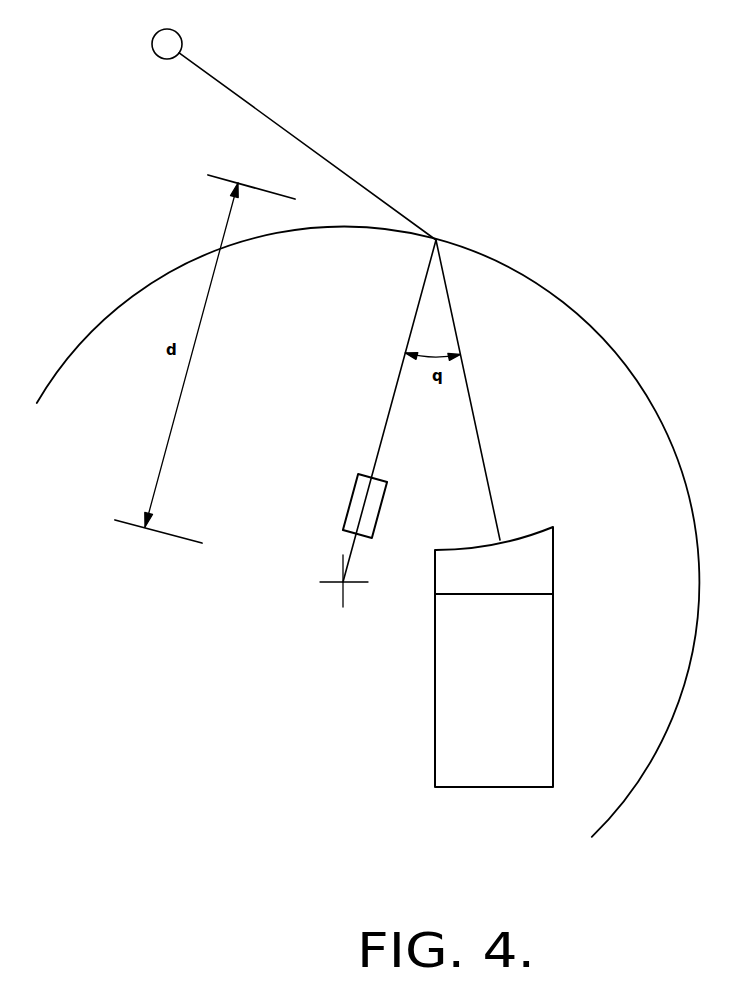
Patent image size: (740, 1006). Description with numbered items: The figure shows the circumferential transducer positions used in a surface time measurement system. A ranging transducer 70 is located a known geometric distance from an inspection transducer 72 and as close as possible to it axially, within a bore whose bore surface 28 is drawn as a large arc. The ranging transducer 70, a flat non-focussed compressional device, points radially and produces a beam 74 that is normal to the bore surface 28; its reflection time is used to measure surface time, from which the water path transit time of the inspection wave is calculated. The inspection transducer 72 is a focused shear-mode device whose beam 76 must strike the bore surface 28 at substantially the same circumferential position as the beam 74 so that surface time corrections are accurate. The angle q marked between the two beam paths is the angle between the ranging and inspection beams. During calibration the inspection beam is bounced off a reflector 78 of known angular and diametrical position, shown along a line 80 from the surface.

The bore surface 28 is at (590, 323).
The ranging transducer 70 is at (353, 493).
The inspection transducer 72 is at (553, 655).
The beam 74 is at (422, 290).
The beam 76 is at (474, 417).
The reflector 78 is at (178, 34).
The line 80 is at (283, 128).